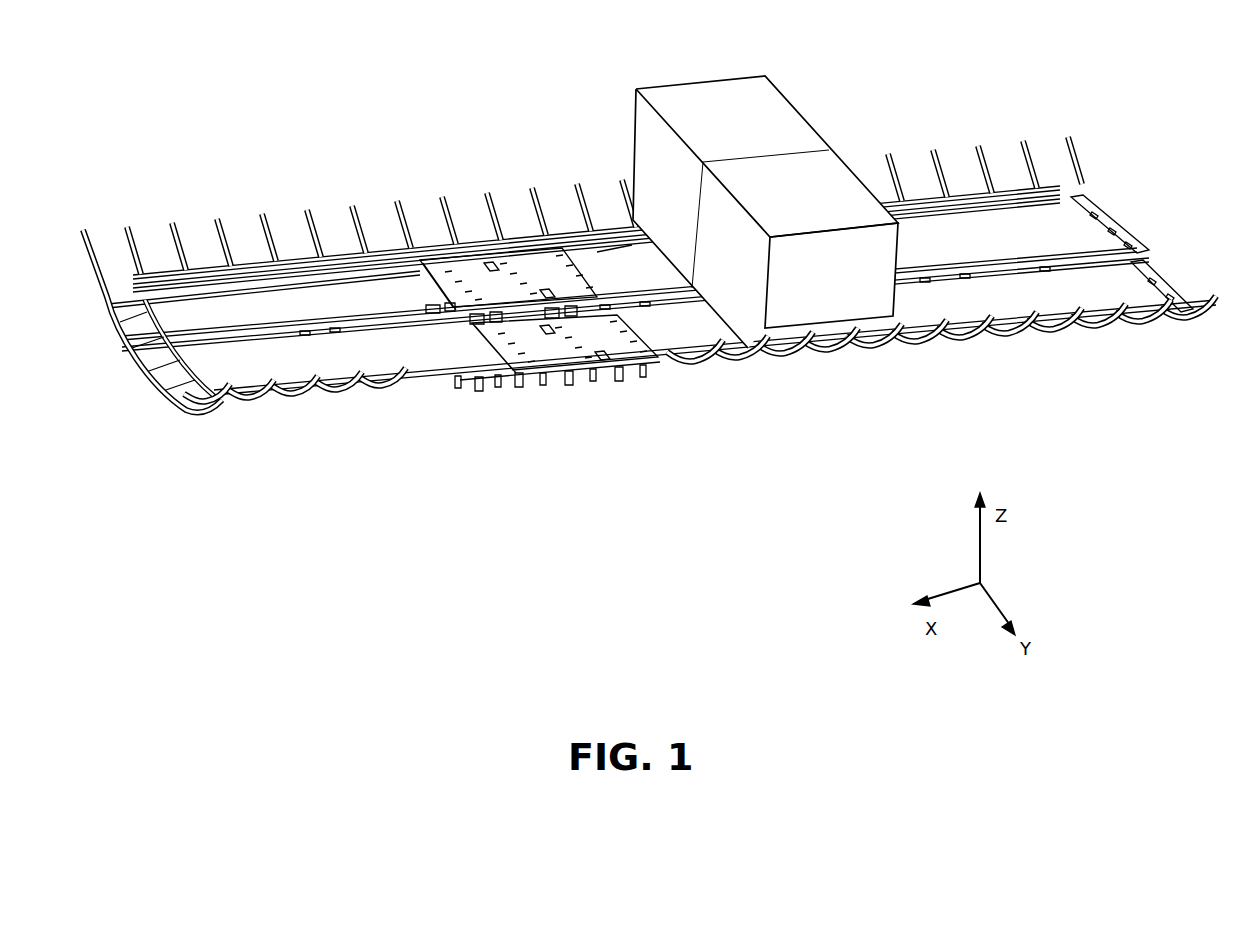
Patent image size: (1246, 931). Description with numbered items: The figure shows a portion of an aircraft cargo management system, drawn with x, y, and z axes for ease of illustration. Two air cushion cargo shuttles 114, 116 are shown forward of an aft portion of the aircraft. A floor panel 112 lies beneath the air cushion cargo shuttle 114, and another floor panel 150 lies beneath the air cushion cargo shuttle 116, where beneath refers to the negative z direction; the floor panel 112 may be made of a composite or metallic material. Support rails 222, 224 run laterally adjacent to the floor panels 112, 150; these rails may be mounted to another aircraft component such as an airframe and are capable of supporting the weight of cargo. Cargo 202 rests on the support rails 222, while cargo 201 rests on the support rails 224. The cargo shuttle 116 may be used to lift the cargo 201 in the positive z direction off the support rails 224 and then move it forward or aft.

The floor panel 112 is at (270, 357).
The air cushion cargo shuttle 114 is at (607, 334).
The air cushion cargo shuttle 116 is at (552, 272).
The floor panel 150 is at (277, 298).
The cargo 201 is at (762, 127).
The cargo 202 is at (848, 278).
The support rails 222 is at (445, 325).
The support rails 224 is at (436, 310).